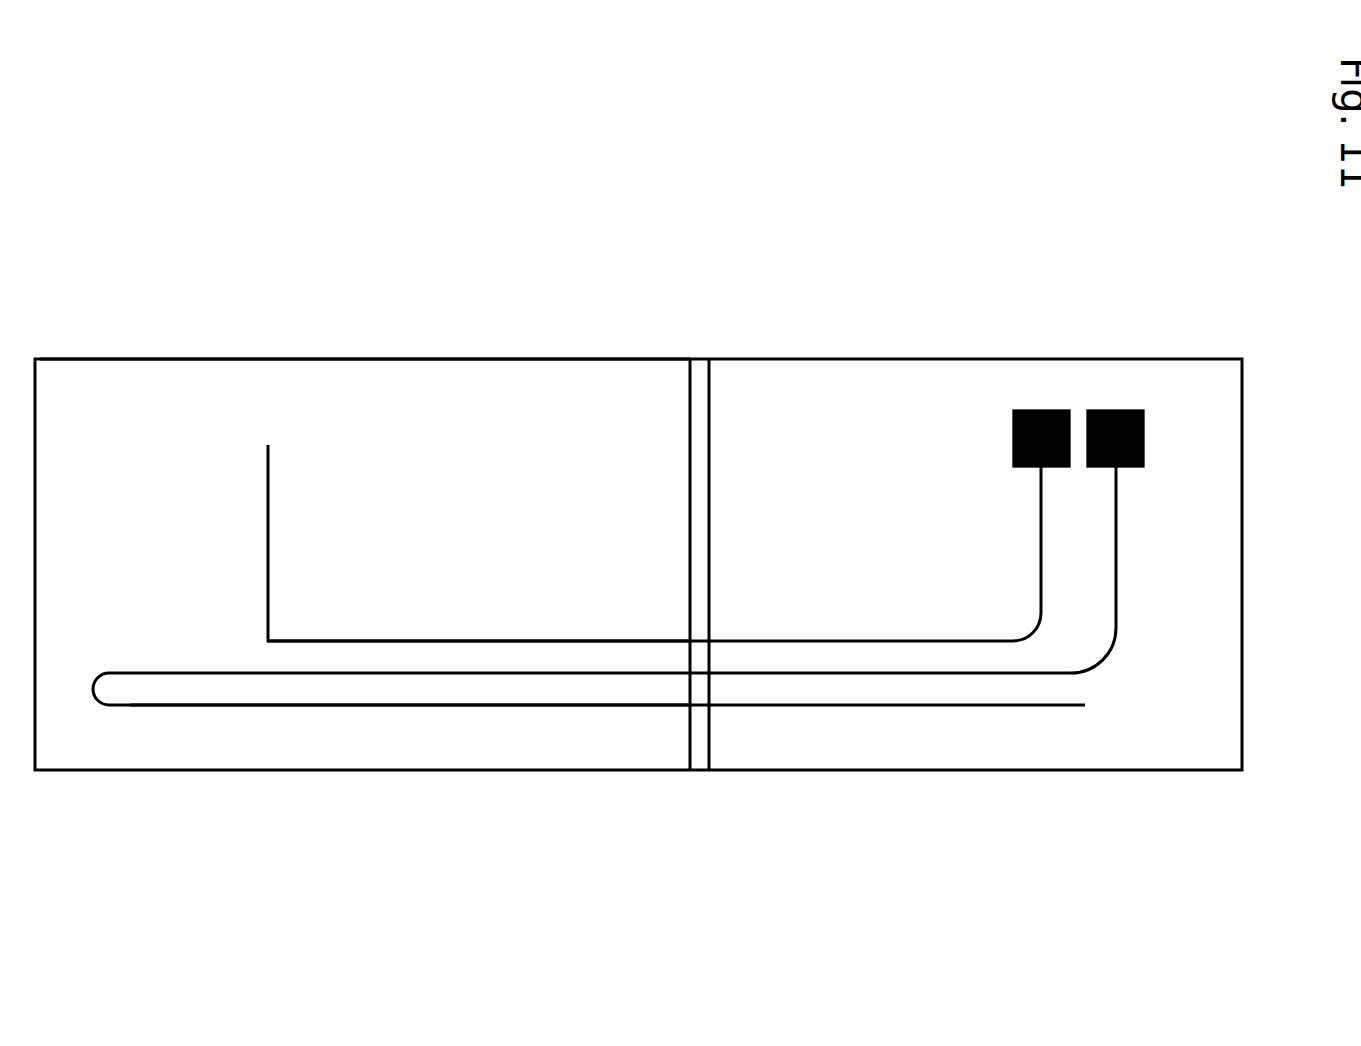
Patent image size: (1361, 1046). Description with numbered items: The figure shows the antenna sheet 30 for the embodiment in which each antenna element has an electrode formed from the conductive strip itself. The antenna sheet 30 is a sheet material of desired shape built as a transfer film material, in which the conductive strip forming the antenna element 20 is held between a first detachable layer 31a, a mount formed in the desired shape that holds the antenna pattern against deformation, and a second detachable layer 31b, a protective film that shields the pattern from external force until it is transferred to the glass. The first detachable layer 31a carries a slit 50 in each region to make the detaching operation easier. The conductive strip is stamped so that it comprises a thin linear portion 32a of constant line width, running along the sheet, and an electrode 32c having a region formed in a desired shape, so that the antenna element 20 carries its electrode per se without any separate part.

The antenna sheet 30 is at (922, 330).
The first detachable layer 31a is at (396, 368).
The second detachable layer 31b is at (311, 368).
The slit 50 is at (698, 372).
The antenna element 20 is at (350, 643).
The thin linear portion 32a is at (566, 641).
The electrode 32c is at (1013, 430).